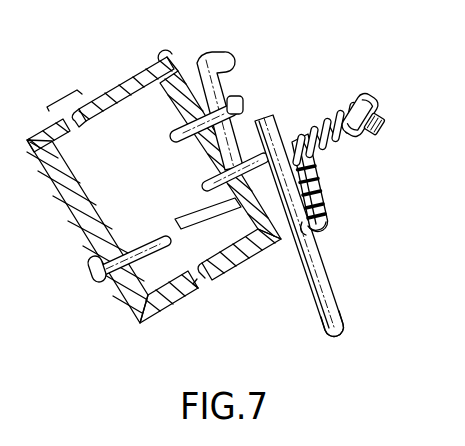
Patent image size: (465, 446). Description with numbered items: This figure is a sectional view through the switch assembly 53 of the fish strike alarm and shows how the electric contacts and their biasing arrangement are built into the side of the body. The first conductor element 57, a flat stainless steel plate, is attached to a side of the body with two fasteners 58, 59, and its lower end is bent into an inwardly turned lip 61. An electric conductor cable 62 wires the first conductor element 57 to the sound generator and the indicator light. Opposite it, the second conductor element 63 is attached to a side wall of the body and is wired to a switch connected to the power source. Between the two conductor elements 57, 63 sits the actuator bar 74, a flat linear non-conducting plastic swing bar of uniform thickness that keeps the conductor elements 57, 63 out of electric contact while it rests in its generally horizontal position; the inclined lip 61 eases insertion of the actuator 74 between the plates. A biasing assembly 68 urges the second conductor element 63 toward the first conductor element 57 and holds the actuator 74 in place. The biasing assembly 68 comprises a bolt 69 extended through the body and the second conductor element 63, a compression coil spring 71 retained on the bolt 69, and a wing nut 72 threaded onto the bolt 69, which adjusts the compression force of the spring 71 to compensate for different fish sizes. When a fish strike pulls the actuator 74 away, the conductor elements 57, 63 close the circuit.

The switch assembly 53 is at (325, 74).
The first conductor element 57 is at (318, 266).
The fastener 58 is at (243, 105).
The fastener 59 is at (205, 186).
The inwardly turned lip 61 is at (340, 321).
The electric conductor cable 62 is at (218, 62).
The second conductor element 63 is at (316, 204).
The biasing assembly 68 is at (402, 120).
The bolt 69 is at (94, 274).
The compression coil spring 71 is at (334, 158).
The wing nut 72 is at (352, 95).
The actuator bar 74 is at (318, 235).